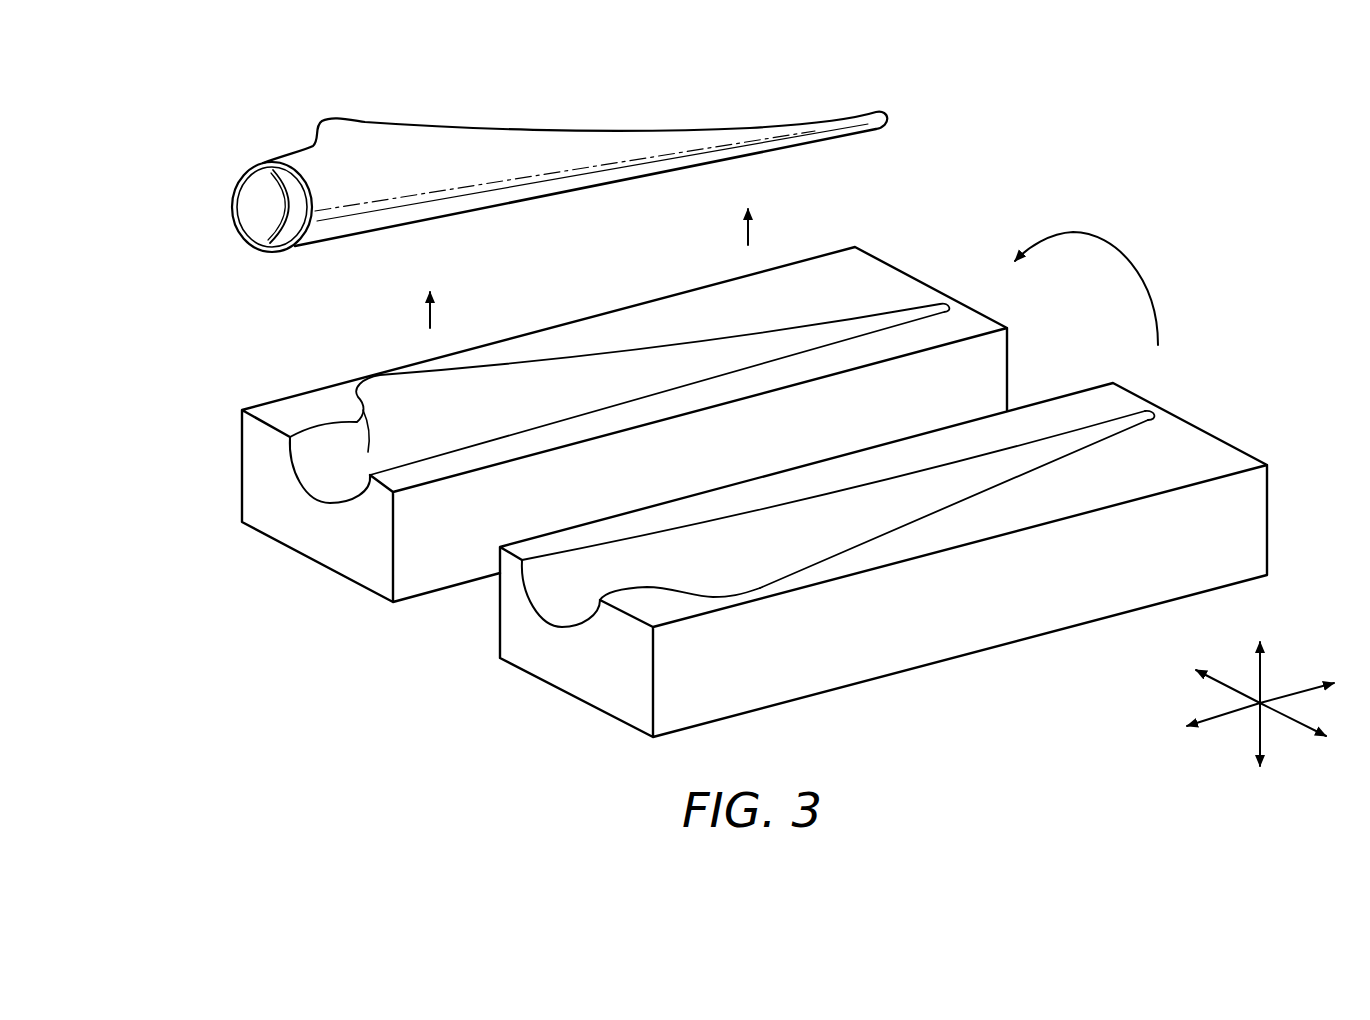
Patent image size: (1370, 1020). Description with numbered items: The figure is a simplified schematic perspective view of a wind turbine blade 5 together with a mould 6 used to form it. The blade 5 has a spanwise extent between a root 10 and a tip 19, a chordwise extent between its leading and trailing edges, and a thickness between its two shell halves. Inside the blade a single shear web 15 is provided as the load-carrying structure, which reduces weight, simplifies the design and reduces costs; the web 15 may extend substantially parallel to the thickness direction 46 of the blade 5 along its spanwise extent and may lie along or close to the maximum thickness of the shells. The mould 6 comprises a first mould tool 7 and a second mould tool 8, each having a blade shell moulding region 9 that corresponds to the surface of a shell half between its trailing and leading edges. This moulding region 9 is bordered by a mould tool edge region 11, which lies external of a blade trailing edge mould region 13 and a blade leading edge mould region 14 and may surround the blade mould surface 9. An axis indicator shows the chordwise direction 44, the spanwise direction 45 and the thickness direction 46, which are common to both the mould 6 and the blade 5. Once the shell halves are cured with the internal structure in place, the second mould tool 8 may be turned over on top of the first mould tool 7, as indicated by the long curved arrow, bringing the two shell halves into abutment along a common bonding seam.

The wind turbine blade 5 is at (213, 182).
The mould 6 is at (292, 700).
The first mould tool 7 is at (220, 461).
The second mould tool 8 is at (551, 703).
The blade shell moulding region 9 is at (1032, 432).
The root 10 is at (258, 165).
The mould tool edge region 11 is at (972, 508).
The blade trailing edge mould region 13 is at (878, 537).
The blade leading edge mould region 14 is at (773, 500).
The shear web 15 is at (292, 232).
The tip 19 is at (885, 95).
The chordwise direction 44 is at (1300, 730).
The spanwise direction 45 is at (1305, 688).
The thickness direction 46 is at (1258, 655).